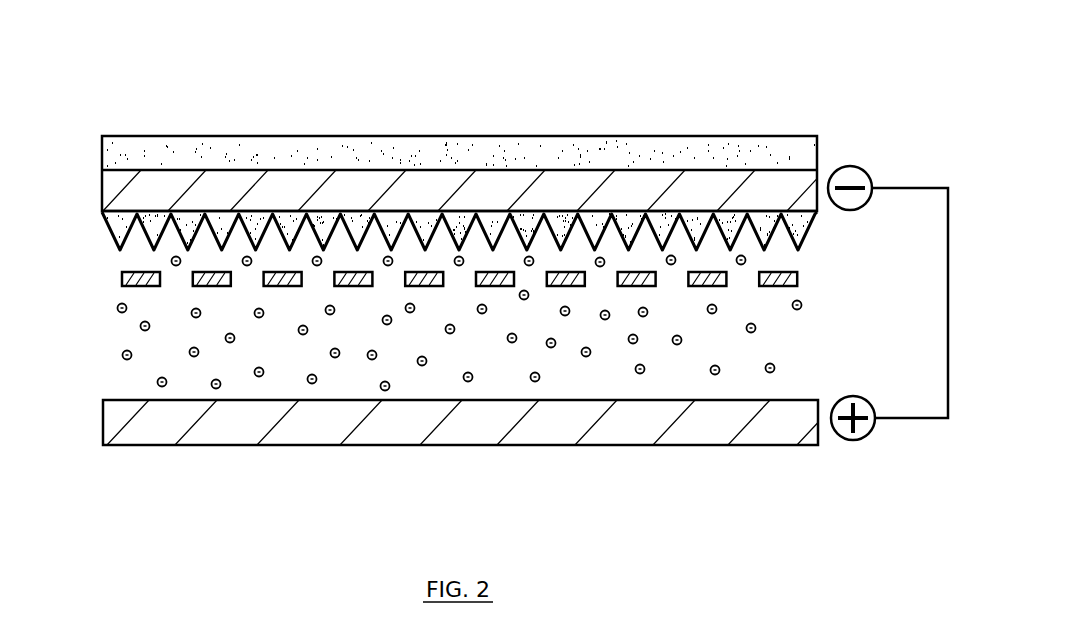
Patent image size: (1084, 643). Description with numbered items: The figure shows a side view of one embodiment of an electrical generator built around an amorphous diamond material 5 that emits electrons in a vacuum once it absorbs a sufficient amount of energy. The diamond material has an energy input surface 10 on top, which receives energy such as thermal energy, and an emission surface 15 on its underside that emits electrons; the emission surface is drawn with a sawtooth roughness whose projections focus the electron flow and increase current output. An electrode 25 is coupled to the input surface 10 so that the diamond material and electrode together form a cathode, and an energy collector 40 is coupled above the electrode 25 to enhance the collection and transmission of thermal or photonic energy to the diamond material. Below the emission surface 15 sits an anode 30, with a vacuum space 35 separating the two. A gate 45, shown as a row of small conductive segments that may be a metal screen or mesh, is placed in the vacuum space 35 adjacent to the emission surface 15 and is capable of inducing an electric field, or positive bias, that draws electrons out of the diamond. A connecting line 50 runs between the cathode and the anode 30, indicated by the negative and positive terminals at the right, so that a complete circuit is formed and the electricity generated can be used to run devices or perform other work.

The amorphous diamond material 5 is at (817, 212).
The energy input surface 10 is at (187, 212).
The emission surface 15 is at (137, 223).
The electrode 25 is at (100, 187).
The anode 30 is at (395, 447).
The vacuum space 35 is at (822, 337).
The energy collector 40 is at (436, 136).
The gate 45 is at (121, 278).
The connecting line 50 is at (920, 187).